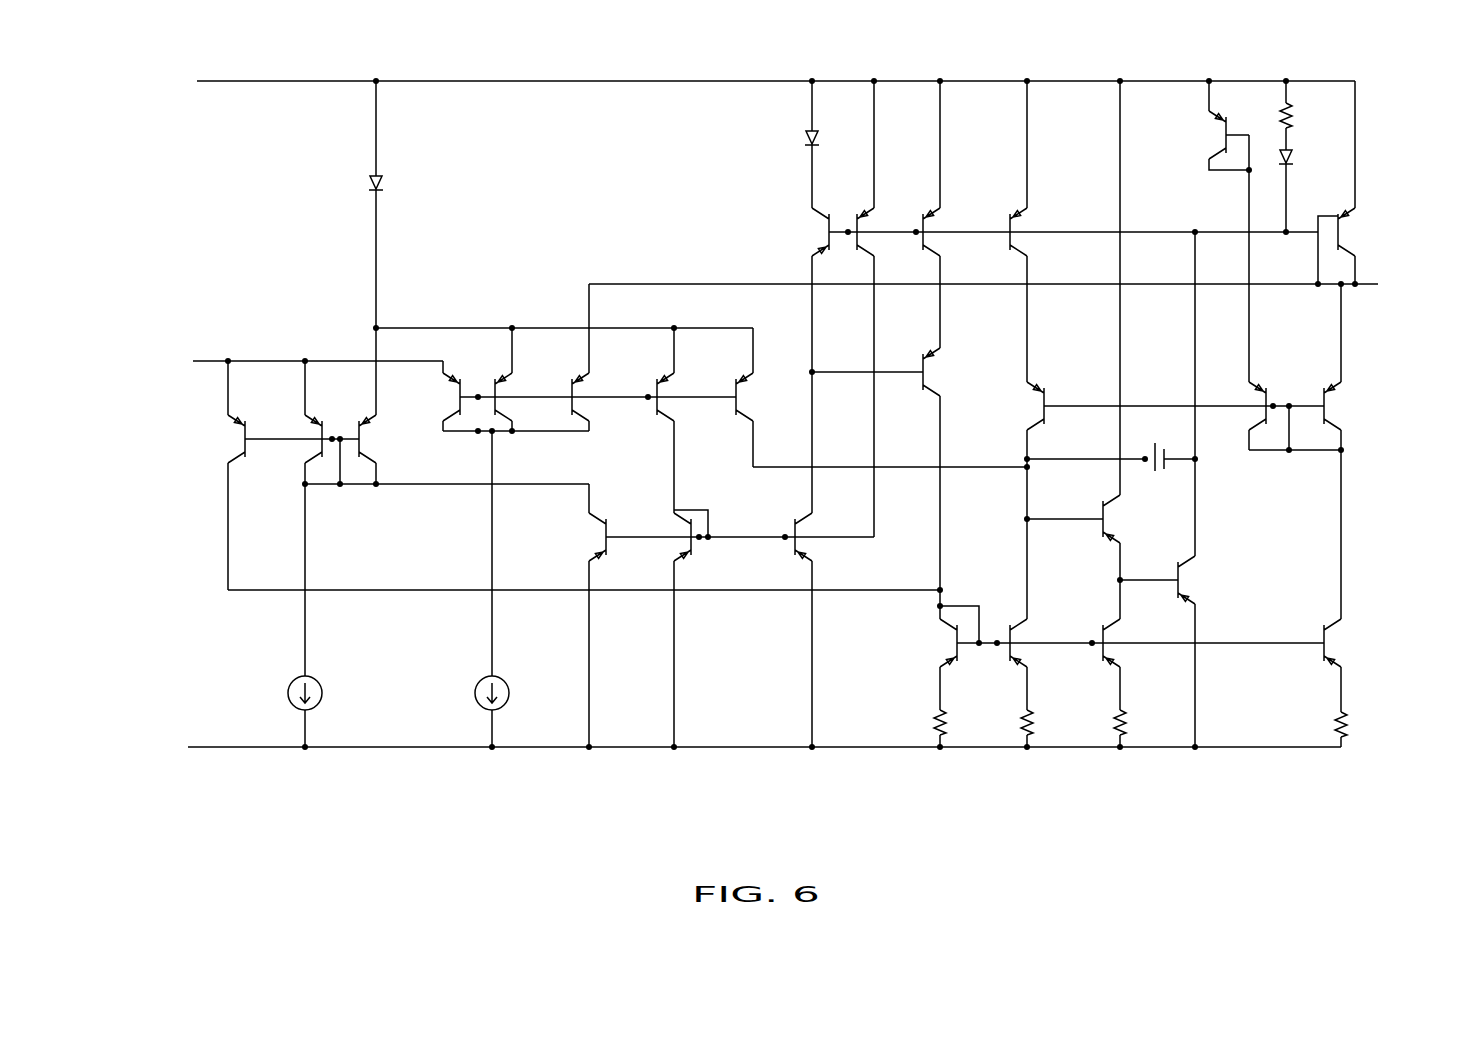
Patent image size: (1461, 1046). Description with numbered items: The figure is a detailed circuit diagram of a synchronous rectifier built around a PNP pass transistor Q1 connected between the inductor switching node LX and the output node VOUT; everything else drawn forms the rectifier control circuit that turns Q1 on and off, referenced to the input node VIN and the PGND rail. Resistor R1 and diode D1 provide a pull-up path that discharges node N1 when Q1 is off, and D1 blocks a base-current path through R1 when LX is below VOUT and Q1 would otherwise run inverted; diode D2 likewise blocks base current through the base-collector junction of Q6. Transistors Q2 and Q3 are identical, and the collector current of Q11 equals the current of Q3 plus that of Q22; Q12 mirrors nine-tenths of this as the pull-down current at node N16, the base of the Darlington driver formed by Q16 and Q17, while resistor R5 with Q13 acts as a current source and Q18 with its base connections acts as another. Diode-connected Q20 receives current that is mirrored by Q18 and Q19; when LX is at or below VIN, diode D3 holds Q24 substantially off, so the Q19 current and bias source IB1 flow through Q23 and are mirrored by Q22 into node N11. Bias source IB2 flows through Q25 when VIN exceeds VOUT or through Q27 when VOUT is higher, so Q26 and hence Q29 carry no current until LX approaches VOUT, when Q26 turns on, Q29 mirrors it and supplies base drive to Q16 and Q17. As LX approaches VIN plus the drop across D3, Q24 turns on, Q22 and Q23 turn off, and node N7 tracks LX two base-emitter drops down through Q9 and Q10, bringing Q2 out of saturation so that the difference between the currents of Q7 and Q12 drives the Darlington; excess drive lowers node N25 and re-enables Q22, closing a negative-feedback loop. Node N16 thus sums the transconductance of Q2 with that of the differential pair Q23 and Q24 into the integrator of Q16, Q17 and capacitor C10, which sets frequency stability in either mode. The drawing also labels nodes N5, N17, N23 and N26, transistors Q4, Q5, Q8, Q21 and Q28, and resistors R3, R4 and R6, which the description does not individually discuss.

The inductor switching node LX is at (759, 73).
The input voltage node VIN is at (293, 355).
The output voltage node VOUT is at (1021, 281).
The power ground PGND is at (730, 748).
The node N1 is at (1219, 223).
The node N5' N5 is at (867, 361).
The node N7 is at (1295, 414).
The node N11 is at (584, 579).
The node N16 is at (1065, 509).
The node N17' N17 is at (1149, 570).
The node N23' N23 is at (447, 497).
The node N25 is at (564, 318).
The node N26' N26 is at (516, 446).
The diode D1 is at (1309, 162).
The diode D2 is at (793, 141).
The diode D3 is at (355, 183).
The resistor R1 is at (1305, 115).
The resistor R3' (0.9R) R3 is at (900, 719).
The resistor R4' (R) R4 is at (1044, 719).
The resistor R5 is at (1137, 719).
The resistor R6' (R) R6 is at (1359, 719).
The capacitor C10 is at (1111, 470).
The bias current source IB1 is at (327, 693).
The bias current source IB2 is at (466, 693).
The PNP pass transistor Q1 is at (1390, 228).
The transistor Q2 is at (1039, 232).
The transistor Q3 is at (952, 232).
The transistor Q4' Q4 is at (886, 232).
The transistor Q5' Q5 is at (947, 372).
The transistor Q6 is at (807, 232).
The transistor Q7 is at (1021, 406).
The transistor Q8' Q8 is at (1348, 406).
The transistor Q9 is at (1239, 404).
The transistor Q10 is at (1196, 135).
The transistor Q11 is at (905, 643).
The transistor Q12 is at (1044, 647).
The transistor Q13 is at (1136, 647).
The Darlington driver transistor Q16 is at (1135, 519).
The Darlington driver transistor Q17 is at (1211, 580).
The transistor Q18 is at (830, 535).
The transistor Q19 is at (573, 537).
The diode connected transistor Q20 is at (655, 535).
The transistor Q21' (A=1) Q21 is at (1358, 647).
The transistor Q22 is at (215, 439).
The transistor Q23 is at (287, 438).
The transistor Q24 is at (388, 439).
The transistor Q25 is at (430, 397).
The transistor Q26 is at (528, 397).
The transistor Q27 is at (606, 397).
The transistor Q28' Q28 is at (692, 397).
The transistor Q29 is at (768, 397).